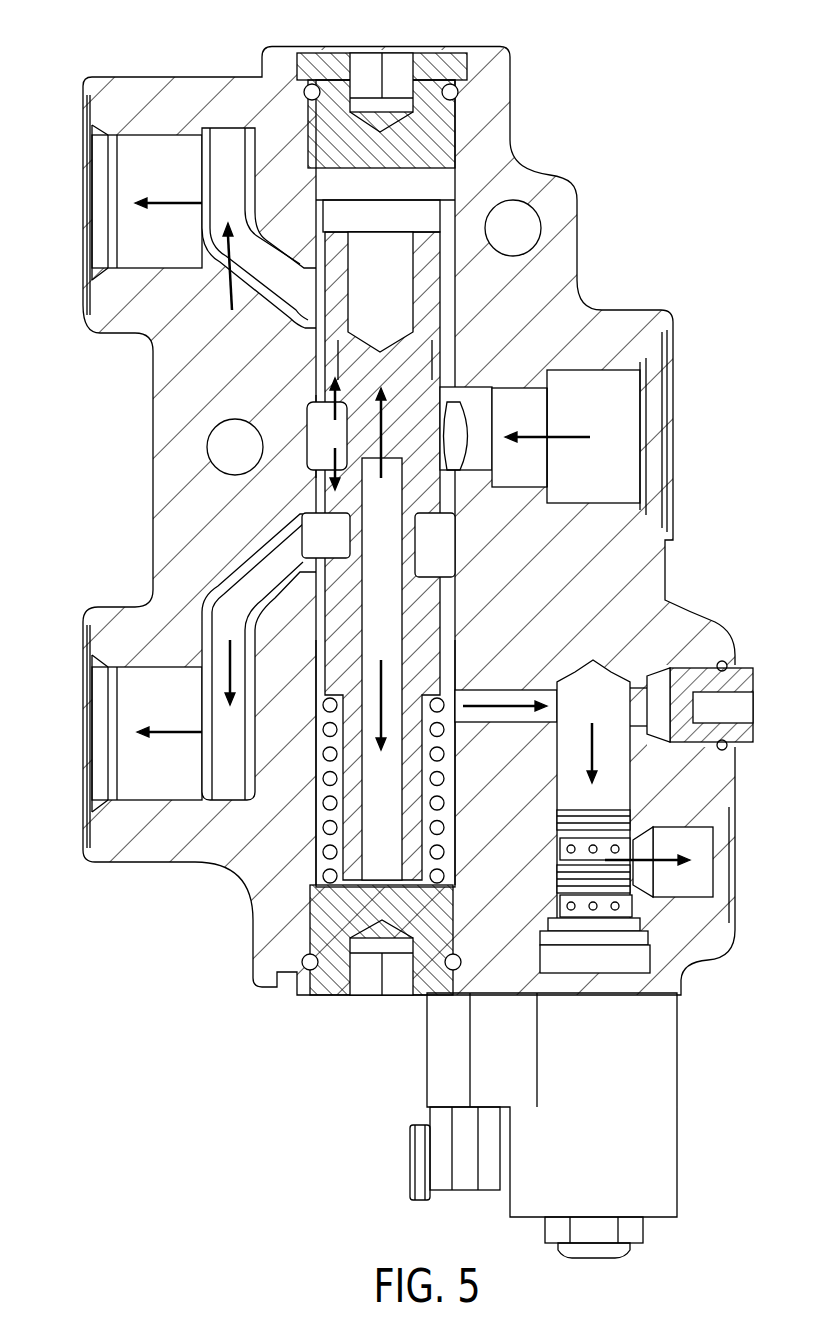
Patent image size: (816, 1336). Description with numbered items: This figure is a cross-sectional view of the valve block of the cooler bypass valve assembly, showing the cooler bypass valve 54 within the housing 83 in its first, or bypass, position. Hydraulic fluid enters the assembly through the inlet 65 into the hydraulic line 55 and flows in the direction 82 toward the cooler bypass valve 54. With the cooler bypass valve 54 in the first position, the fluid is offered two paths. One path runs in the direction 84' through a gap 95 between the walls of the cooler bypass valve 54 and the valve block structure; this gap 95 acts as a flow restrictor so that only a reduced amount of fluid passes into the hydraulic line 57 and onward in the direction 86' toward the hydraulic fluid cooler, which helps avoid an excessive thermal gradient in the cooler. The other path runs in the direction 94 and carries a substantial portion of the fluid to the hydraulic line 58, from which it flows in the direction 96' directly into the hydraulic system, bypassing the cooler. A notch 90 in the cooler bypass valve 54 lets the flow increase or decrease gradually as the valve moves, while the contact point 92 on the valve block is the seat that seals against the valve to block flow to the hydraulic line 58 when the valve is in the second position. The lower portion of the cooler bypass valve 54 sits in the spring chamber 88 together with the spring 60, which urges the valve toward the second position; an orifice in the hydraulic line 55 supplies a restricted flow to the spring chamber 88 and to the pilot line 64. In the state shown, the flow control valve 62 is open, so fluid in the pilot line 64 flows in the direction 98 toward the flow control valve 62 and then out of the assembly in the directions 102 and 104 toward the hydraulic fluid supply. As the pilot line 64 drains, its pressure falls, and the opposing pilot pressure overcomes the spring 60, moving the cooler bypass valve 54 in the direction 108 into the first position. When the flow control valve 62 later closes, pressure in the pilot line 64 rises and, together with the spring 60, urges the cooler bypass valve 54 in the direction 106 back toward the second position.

The housing 83 is at (257, 90).
The direction 86' is at (121, 205).
The hydraulic line 57 is at (234, 310).
The gap 95 is at (330, 418).
The direction 84' is at (217, 434).
The direction 94 is at (355, 503).
The notch 90 is at (332, 547).
The hydraulic line 58 is at (230, 640).
The direction 96' is at (122, 736).
The spring chamber 88 is at (295, 813).
The spring 60 is at (325, 835).
The direction 108 is at (387, 675).
The direction 106 is at (413, 430).
The hydraulic line 55 is at (590, 404).
The inlet 65 is at (668, 437).
The direction 82 is at (575, 440).
The contact point 92 is at (327, 503).
The cooler bypass valve 54 is at (415, 578).
The direction 98 is at (507, 697).
The pilot line 64 is at (503, 745).
The direction 102 is at (598, 750).
The flow control valve 62 is at (600, 775).
The direction 104 is at (660, 860).